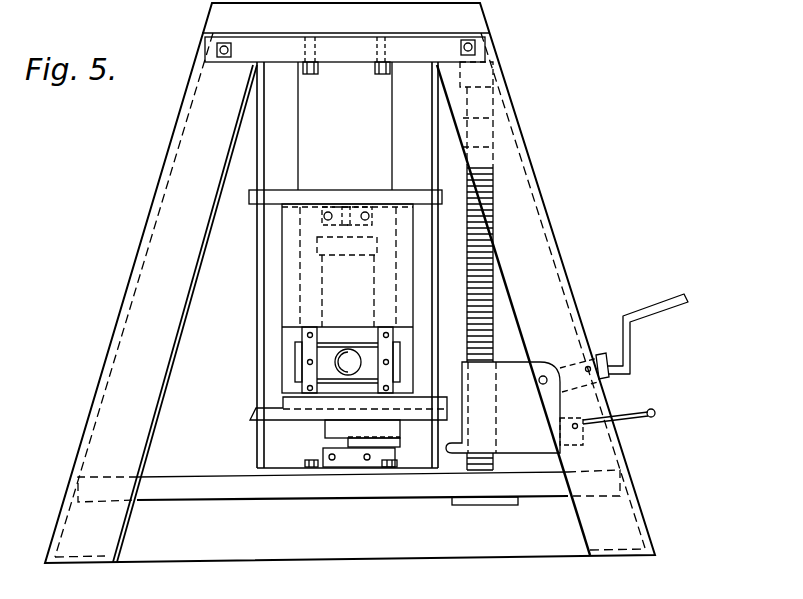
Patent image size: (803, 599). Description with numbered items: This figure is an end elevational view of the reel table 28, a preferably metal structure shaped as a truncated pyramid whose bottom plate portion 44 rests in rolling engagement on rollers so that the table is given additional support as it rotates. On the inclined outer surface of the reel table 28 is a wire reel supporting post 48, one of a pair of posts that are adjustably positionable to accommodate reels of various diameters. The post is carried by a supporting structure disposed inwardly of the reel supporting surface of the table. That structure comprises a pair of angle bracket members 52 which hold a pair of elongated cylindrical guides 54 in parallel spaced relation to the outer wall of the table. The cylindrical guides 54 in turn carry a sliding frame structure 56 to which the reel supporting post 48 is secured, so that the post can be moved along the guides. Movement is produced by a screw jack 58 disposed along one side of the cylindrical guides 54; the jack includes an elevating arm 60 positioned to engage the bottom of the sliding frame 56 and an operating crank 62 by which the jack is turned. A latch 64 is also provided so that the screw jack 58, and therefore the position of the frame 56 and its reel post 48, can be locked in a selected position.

The reel table 28 is at (131, 258).
The bottom plate portion 44 is at (360, 556).
The wire reel supporting post 48 is at (340, 357).
The angle bracket members 52 is at (257, 157).
The elongated cylindrical guides 54 is at (298, 93).
The sliding frame structure 56 is at (293, 421).
The screw jack 58 is at (522, 405).
The elevating arm 60 is at (418, 445).
The operating crank 62 is at (662, 306).
The latch 64 is at (655, 416).